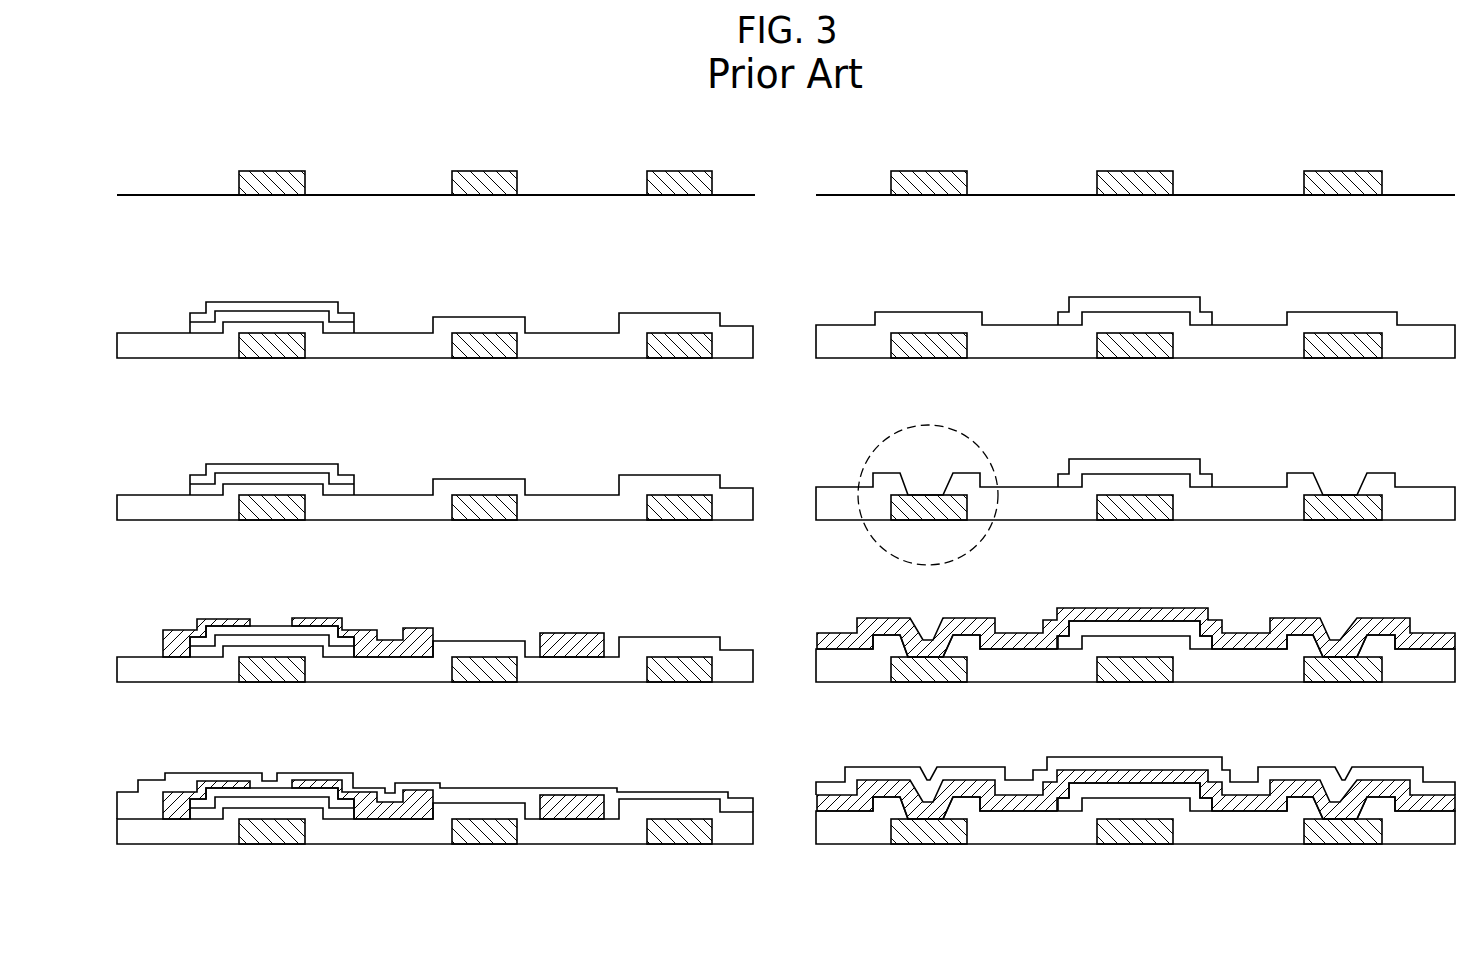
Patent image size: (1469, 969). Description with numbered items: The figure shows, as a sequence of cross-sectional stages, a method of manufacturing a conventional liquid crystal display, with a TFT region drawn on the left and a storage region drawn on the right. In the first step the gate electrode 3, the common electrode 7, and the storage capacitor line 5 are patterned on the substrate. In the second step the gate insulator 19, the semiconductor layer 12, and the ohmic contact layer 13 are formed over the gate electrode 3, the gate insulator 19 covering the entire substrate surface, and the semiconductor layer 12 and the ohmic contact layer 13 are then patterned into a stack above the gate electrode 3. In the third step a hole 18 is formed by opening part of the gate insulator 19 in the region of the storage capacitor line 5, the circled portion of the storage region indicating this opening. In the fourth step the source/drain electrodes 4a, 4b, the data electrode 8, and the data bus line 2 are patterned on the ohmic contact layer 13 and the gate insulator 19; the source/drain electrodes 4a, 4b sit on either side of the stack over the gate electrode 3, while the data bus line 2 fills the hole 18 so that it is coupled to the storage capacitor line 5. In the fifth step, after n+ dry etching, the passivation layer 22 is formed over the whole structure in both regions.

The gate electrode 3 is at (283, 177).
The common electrode 7 is at (496, 177).
The storage capacitor line 5 is at (944, 177).
The semiconductor layer 12 is at (248, 317).
The ohmic contact layer 13 is at (293, 305).
The gate insulator 19 is at (387, 347).
The hole 18 is at (985, 452).
The source electrode 4a is at (227, 622).
The drain electrode 4b is at (325, 622).
The data electrode 8 is at (578, 640).
The data bus line 2 is at (1155, 616).
The passivation layer 22 is at (491, 794).